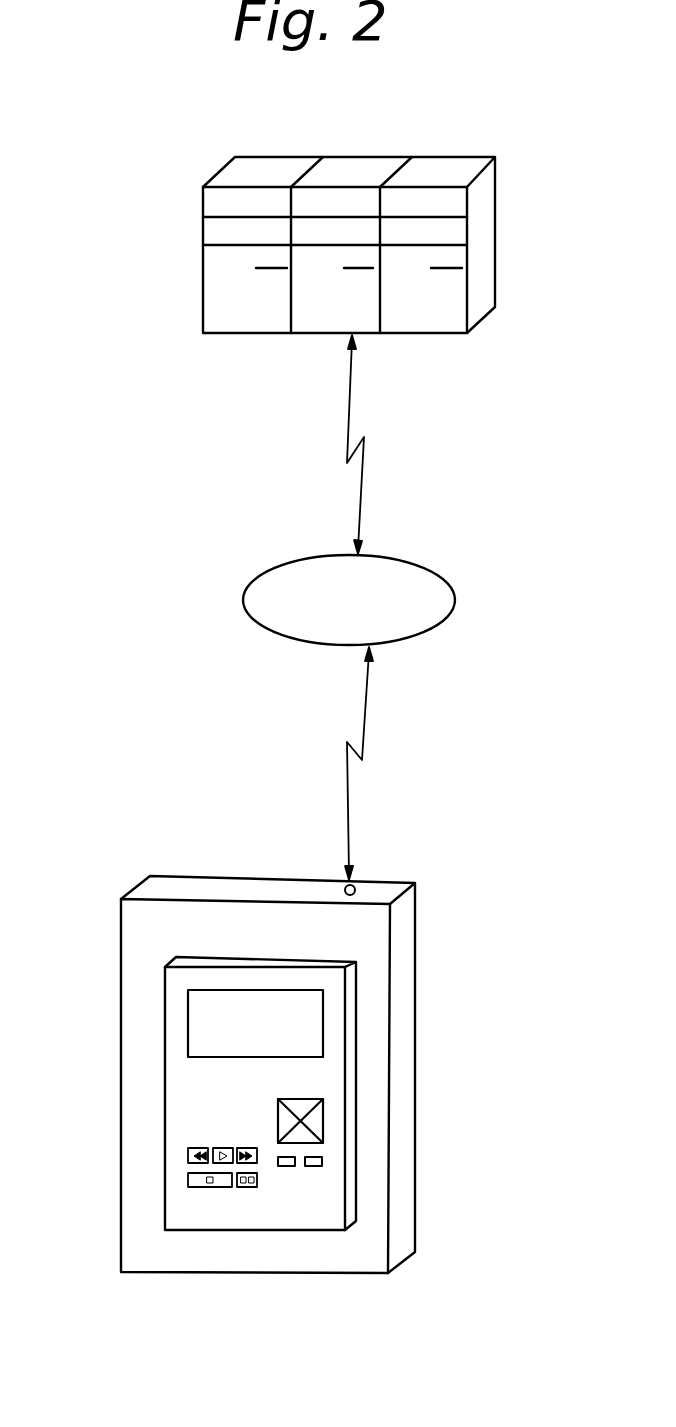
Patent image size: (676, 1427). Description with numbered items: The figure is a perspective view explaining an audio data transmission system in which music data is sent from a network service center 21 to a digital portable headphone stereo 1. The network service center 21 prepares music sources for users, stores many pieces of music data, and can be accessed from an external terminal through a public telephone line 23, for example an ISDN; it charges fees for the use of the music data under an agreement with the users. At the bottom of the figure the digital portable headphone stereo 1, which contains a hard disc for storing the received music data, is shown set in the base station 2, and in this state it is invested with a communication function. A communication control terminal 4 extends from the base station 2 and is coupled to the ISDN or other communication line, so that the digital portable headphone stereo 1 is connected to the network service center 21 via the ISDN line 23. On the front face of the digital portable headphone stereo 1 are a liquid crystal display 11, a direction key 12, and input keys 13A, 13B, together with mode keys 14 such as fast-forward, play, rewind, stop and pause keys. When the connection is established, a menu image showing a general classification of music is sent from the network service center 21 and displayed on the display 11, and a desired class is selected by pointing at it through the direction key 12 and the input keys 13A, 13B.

The network service center 21 is at (365, 156).
The public telephone line 23 is at (305, 557).
The digital portable headphone stereo 1 is at (190, 1080).
The base station 2 is at (375, 932).
The communication control terminal 4 is at (358, 888).
The liquid crystal display 11 is at (308, 1025).
The direction key 12 is at (317, 1118).
The input key 13A is at (322, 1161).
The input key 13B is at (292, 1167).
The mode keys 14 is at (186, 1166).